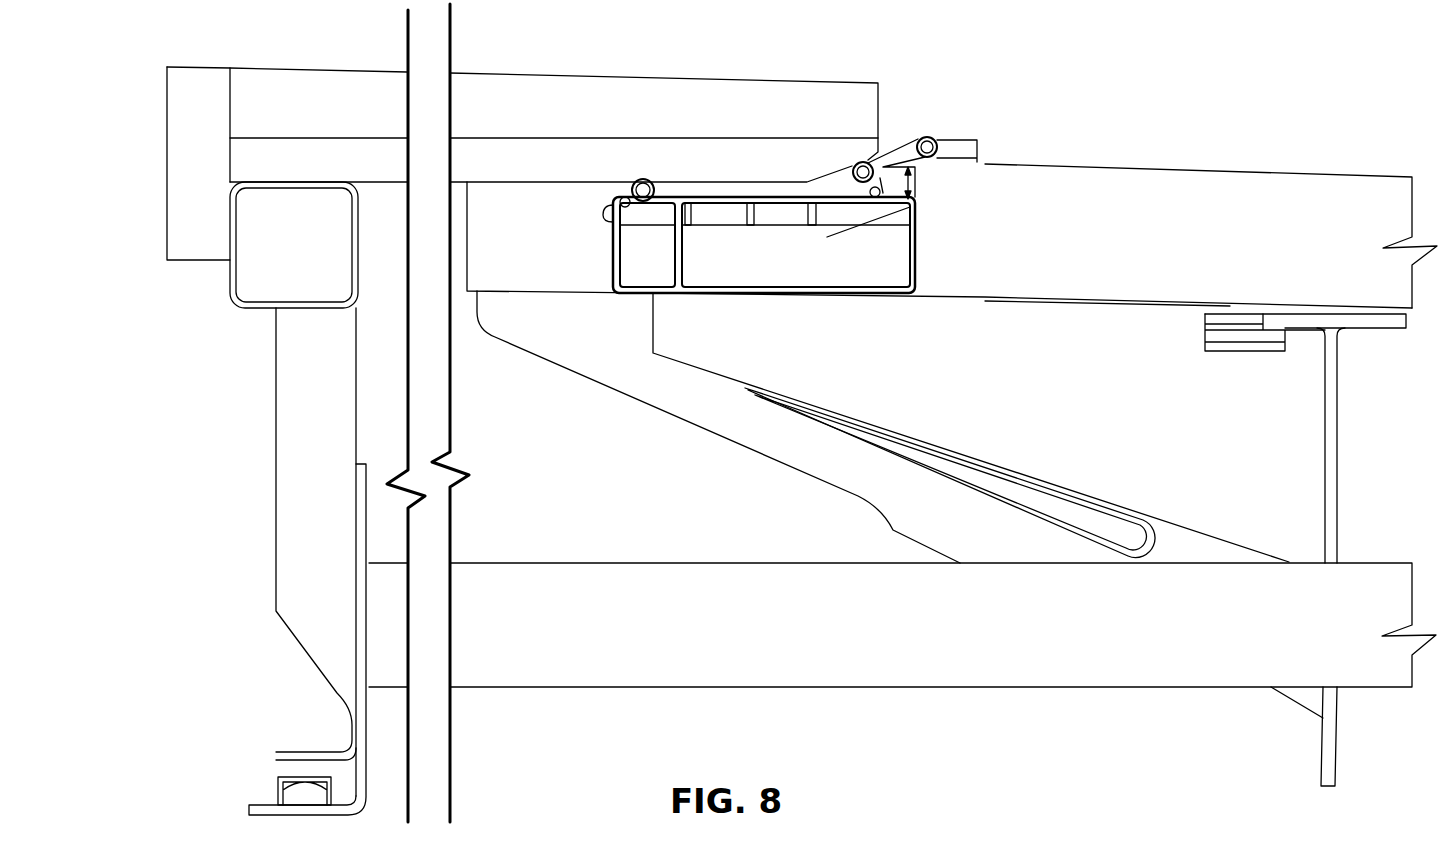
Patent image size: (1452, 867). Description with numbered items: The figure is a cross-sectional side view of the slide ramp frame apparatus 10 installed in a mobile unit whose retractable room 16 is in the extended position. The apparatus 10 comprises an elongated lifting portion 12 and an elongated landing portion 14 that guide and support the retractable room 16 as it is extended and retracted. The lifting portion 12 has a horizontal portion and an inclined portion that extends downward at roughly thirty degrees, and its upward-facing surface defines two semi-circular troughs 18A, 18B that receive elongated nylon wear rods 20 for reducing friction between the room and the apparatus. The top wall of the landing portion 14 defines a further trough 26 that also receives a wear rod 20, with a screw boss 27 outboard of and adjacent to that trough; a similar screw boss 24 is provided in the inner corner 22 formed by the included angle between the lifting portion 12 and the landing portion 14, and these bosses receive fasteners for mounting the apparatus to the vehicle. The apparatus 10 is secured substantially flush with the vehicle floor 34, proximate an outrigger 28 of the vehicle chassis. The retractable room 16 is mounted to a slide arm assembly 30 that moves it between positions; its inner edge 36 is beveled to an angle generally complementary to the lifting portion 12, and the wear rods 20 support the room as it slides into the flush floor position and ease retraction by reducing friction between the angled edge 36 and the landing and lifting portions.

The slide ramp frame apparatus 10 is at (990, 158).
The lifting portion 12 is at (973, 132).
The landing portion 14 is at (915, 303).
The retractable room 16 is at (138, 183).
The semi-circular trough 18A is at (937, 160).
The semi-circular trough 18B is at (872, 183).
The nylon wear rod 20 is at (648, 182).
The inner corner 22 is at (912, 200).
The screw boss 24 is at (876, 198).
The semi-circular trough 26 is at (656, 188).
The screw boss 27 is at (622, 199).
The outrigger 28 is at (1343, 433).
The slide arm assembly 30 is at (287, 463).
The vehicle floor 34 is at (1227, 272).
The inner edge 36 is at (845, 150).